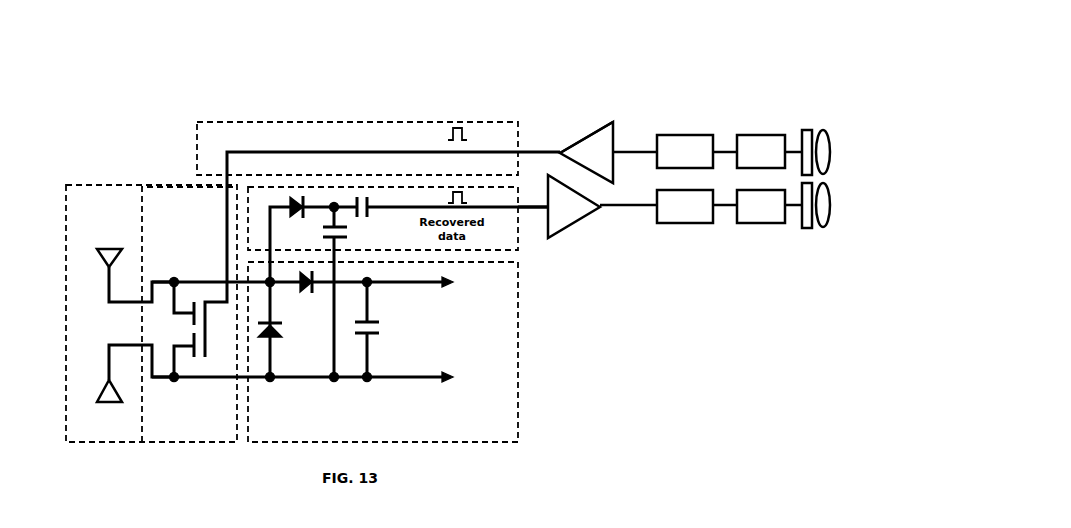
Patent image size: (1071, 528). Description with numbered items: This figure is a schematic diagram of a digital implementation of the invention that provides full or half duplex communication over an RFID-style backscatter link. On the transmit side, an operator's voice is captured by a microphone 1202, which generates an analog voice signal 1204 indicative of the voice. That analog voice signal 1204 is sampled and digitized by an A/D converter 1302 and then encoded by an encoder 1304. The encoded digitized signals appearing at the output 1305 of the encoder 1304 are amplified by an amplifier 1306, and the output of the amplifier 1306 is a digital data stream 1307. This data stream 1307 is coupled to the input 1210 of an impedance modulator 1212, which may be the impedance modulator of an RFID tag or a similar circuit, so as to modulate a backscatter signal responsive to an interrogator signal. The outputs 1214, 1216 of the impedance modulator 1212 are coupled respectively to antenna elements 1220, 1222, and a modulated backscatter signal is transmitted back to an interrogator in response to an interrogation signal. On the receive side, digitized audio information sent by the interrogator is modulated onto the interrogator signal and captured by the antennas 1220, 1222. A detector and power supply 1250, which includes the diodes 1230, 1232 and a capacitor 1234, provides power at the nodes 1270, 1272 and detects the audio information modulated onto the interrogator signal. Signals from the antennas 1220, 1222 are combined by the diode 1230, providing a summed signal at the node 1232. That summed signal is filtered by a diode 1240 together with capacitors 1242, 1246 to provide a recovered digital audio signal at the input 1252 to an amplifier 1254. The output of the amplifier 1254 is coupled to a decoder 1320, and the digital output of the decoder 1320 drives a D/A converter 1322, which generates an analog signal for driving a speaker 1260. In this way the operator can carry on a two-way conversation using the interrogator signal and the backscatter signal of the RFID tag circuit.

The microphone 1202 is at (805, 130).
The analog voice signal 1204 is at (795, 150).
The input of impedance modulator 1210 is at (225, 257).
The impedance modulator 1212 is at (160, 442).
The output of impedance modulator 1214 is at (132, 300).
The output of impedance modulator 1216 is at (100, 318).
The antenna element 1220 is at (110, 247).
The antenna element 1222 is at (110, 402).
The diode 1230 is at (278, 333).
The diode / node 1232 is at (272, 285).
The capacitor 1234 is at (386, 330).
The diode 1240 is at (293, 195).
The capacitor 1242 is at (316, 292).
The capacitor 1246 is at (367, 195).
The detector and power supply 1250 is at (518, 338).
The input to amplifier 1252 is at (532, 210).
The amplifier 1254 is at (578, 233).
The speaker 1260 is at (812, 227).
The power node 1270 is at (385, 283).
The power node 1272 is at (402, 375).
The A/D converter 1302 is at (755, 135).
The encoder 1304 is at (710, 137).
The output of encoder 1305 is at (603, 143).
The amplifier 1306 is at (597, 117).
The data stream 1307 is at (458, 122).
The decoder 1320 is at (670, 223).
The D/A converter 1322 is at (753, 223).